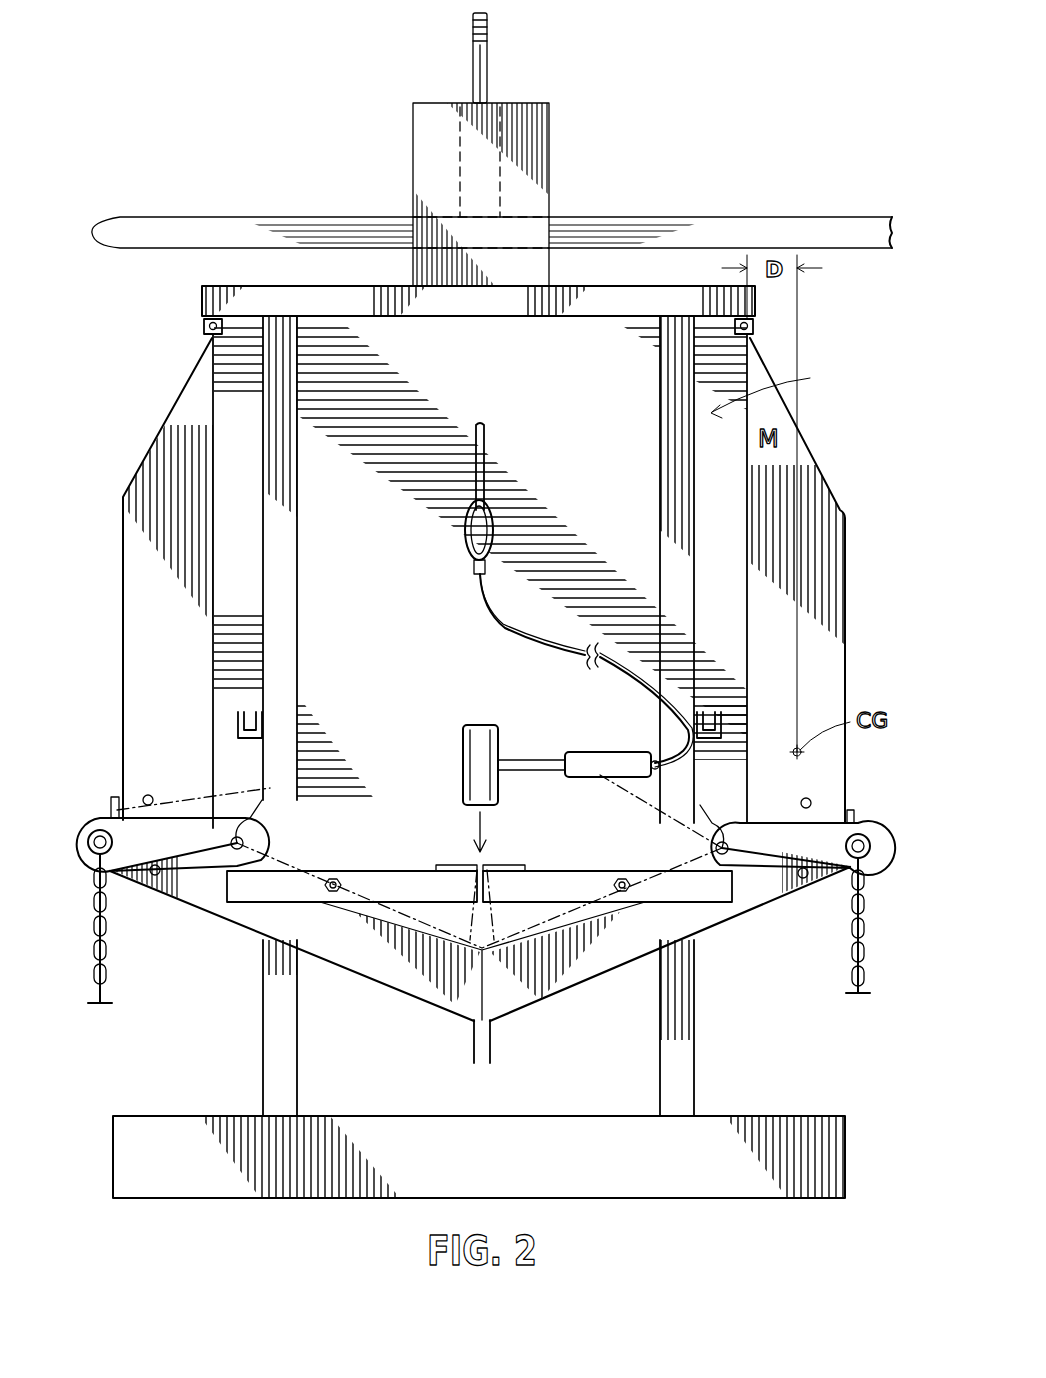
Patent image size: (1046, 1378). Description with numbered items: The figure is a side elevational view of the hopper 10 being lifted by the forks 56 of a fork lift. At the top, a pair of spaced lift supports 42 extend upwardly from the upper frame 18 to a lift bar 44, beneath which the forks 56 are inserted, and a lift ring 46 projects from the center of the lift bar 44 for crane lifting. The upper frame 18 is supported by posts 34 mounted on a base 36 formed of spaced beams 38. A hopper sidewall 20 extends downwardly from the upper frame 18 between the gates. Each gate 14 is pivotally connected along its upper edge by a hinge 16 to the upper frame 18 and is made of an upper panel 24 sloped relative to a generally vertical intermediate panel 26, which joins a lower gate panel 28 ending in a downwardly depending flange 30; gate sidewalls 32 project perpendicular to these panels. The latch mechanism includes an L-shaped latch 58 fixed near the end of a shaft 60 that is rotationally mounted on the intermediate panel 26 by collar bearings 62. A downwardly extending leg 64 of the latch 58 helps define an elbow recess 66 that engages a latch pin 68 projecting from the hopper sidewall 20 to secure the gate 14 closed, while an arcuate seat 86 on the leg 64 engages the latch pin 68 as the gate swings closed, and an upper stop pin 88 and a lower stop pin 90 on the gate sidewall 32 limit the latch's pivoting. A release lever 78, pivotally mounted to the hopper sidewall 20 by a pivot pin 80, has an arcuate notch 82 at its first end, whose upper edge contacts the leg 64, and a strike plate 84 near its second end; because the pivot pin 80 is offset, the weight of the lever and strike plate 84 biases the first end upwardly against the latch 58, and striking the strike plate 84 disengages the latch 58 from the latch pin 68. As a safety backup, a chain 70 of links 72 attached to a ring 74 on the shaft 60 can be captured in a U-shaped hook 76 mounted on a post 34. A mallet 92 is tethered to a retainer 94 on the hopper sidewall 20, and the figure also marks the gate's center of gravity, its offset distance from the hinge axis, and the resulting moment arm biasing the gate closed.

The hopper 10 is at (782, 130).
The gate 14 is at (120, 494).
The hinge 16 is at (204, 326).
The upper frame 18 is at (342, 290).
The hopper sidewall 20 is at (422, 618).
The upper panel 24 is at (165, 425).
The intermediate panel 26 is at (118, 622).
The lower gate panel 28 is at (380, 985).
The flange 30 is at (474, 1042).
The gate sidewall 32 is at (175, 645).
The post 34 is at (298, 516).
The base 36 is at (110, 1158).
The beam 38 is at (500, 1177).
The lift support 42 is at (550, 126).
The lift bar 44 is at (460, 150).
The lift ring 46 is at (488, 60).
The forks 56 is at (597, 214).
The latch 58 is at (175, 820).
The shaft 60 is at (92, 830).
The collar bearing 62 is at (114, 798).
The leg 64 is at (278, 872).
The elbow recess 66 is at (255, 805).
The latch pin 68 is at (230, 850).
The chain 70 is at (95, 942).
The link 72 is at (94, 978).
The ring 74 is at (90, 853).
The hook 76 is at (238, 724).
The release lever 78 is at (545, 872).
The pivot pin 80 is at (342, 879).
The arcuate notch 82 is at (230, 897).
The strike plate 84 is at (456, 864).
The arcuate seat 86 is at (272, 842).
The upper stop pin 88 is at (148, 795).
The lower stop pin 90 is at (153, 878).
The mallet 92 is at (530, 760).
The retainer 94 is at (488, 456).